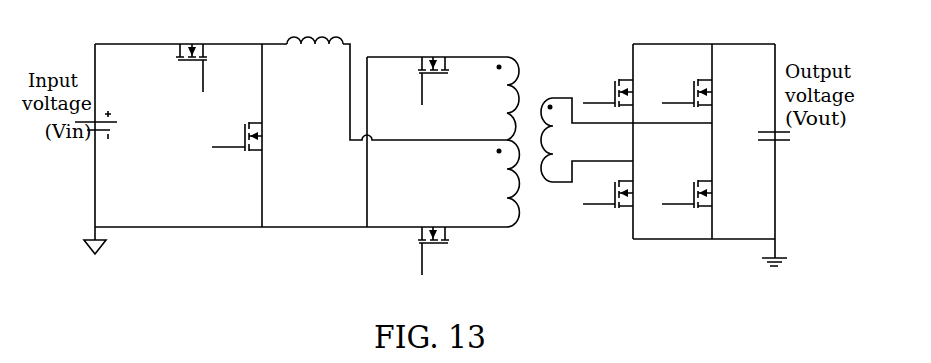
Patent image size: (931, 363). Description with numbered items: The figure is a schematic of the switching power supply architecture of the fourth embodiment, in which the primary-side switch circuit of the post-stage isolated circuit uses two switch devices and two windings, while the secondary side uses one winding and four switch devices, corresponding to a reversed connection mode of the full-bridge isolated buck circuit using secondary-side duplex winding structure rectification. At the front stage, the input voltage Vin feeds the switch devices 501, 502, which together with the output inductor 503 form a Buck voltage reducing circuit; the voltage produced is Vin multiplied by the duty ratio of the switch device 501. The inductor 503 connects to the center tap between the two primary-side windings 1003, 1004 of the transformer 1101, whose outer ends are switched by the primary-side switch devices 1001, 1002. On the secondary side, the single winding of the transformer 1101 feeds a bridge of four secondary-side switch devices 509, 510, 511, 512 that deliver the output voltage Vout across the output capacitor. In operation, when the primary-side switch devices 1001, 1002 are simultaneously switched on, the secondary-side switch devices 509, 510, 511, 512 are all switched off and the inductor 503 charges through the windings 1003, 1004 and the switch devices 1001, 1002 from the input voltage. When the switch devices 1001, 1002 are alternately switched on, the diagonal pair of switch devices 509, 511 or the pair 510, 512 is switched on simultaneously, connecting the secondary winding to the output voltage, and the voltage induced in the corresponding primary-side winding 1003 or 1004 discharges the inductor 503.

The switch device 501 is at (184, 52).
The switch device 502 is at (237, 156).
The inductor 503 is at (315, 28).
The primary-side switch device 1001 is at (435, 64).
The primary-side switch device 1002 is at (435, 234).
The primary-side winding 1003 is at (488, 98).
The primary-side winding 1004 is at (488, 183).
The transformer 1101 is at (614, 179).
The secondary-side switch device 509 is at (608, 87).
The secondary-side switch device 510 is at (608, 206).
The secondary-side switch device 511 is at (687, 206).
The secondary-side switch device 512 is at (683, 87).